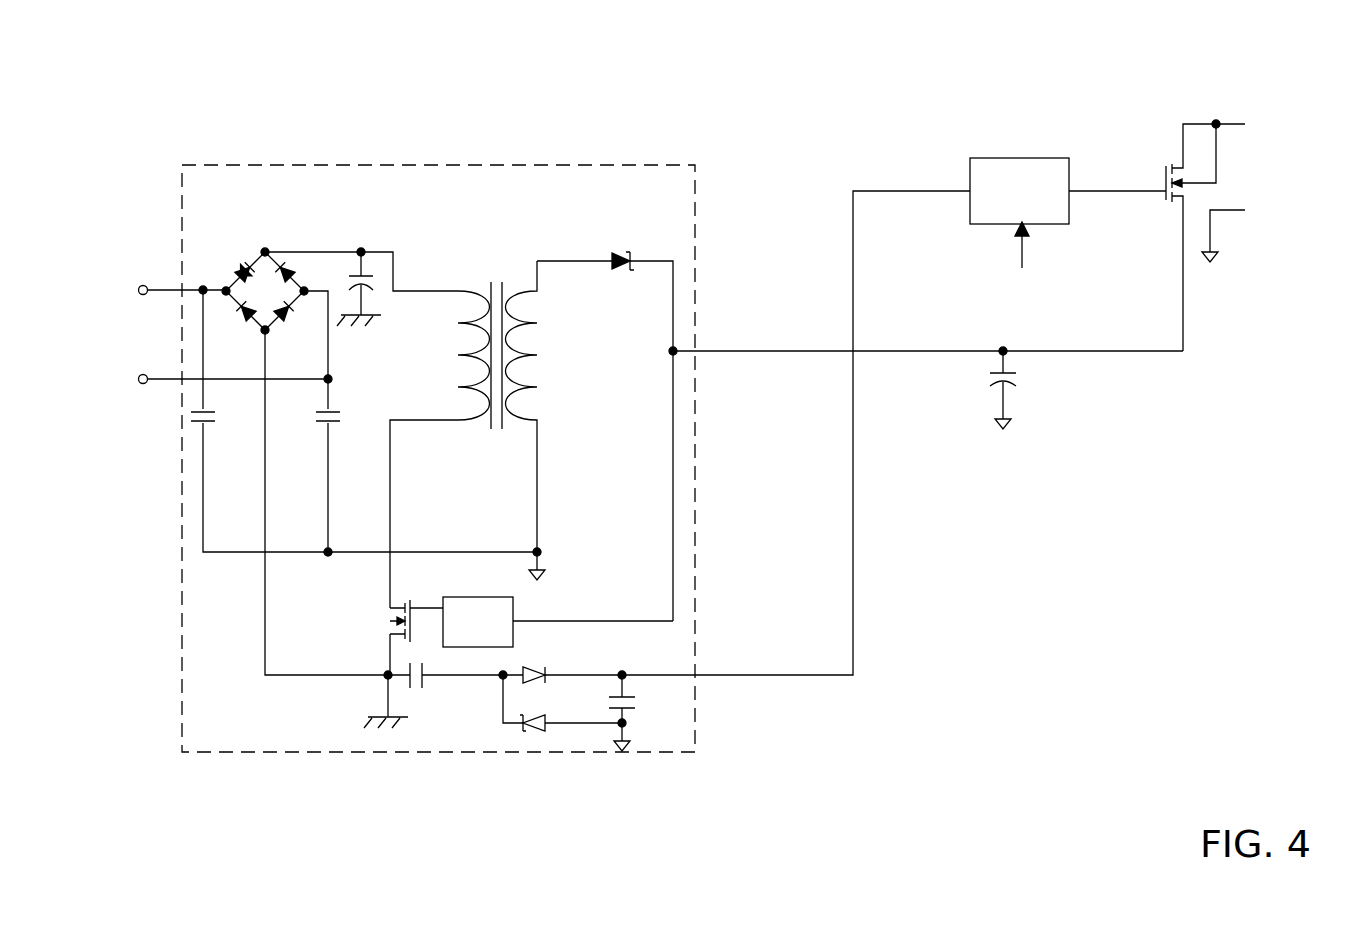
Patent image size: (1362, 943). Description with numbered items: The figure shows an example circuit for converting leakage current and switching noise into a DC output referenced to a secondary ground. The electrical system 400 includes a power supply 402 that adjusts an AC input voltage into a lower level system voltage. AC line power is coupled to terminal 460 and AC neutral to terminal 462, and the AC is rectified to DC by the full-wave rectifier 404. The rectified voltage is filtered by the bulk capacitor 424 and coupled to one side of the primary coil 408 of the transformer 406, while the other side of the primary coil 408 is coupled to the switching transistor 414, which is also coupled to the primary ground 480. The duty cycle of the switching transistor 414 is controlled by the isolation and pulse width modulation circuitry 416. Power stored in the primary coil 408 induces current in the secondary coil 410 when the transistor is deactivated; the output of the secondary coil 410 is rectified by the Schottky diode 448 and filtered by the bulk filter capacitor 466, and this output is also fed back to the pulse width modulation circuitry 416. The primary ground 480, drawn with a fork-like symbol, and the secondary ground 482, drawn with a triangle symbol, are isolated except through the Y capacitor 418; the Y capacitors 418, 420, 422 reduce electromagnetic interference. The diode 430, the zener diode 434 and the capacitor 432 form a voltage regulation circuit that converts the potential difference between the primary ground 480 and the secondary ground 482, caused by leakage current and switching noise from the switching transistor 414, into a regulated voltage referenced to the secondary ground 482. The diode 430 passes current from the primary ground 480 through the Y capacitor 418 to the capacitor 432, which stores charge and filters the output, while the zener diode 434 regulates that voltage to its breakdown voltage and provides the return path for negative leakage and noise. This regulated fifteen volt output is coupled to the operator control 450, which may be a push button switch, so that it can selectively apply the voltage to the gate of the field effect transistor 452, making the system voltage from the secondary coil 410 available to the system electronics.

The electrical system 400 is at (136, 92).
The power supply 402 is at (212, 164).
The full-wave rectifier 404 is at (266, 250).
The transformer 406 is at (489, 426).
The primary coil 408 is at (458, 347).
The secondary coil 410 is at (537, 347).
The switching transistor 414 is at (411, 610).
The isolation and pulse width modulation circuitry 416 is at (558, 622).
The Y capacitor 418 is at (425, 684).
The Y capacitor 420 is at (324, 425).
The Y capacitor 422 is at (211, 425).
The bulk capacitor 424 is at (354, 278).
The diode 430 is at (532, 666).
The capacitor 432 is at (615, 697).
The zener diode 434 is at (535, 730).
The Schottky diode 448 is at (619, 270).
The operator control 450 is at (1068, 227).
The field effect transistor 452 is at (1165, 186).
The terminal 460 is at (143, 296).
The terminal 462 is at (143, 385).
The bulk filter capacitor 466 is at (1000, 386).
The primary ground 480 is at (366, 316).
The secondary ground 482 is at (542, 580).